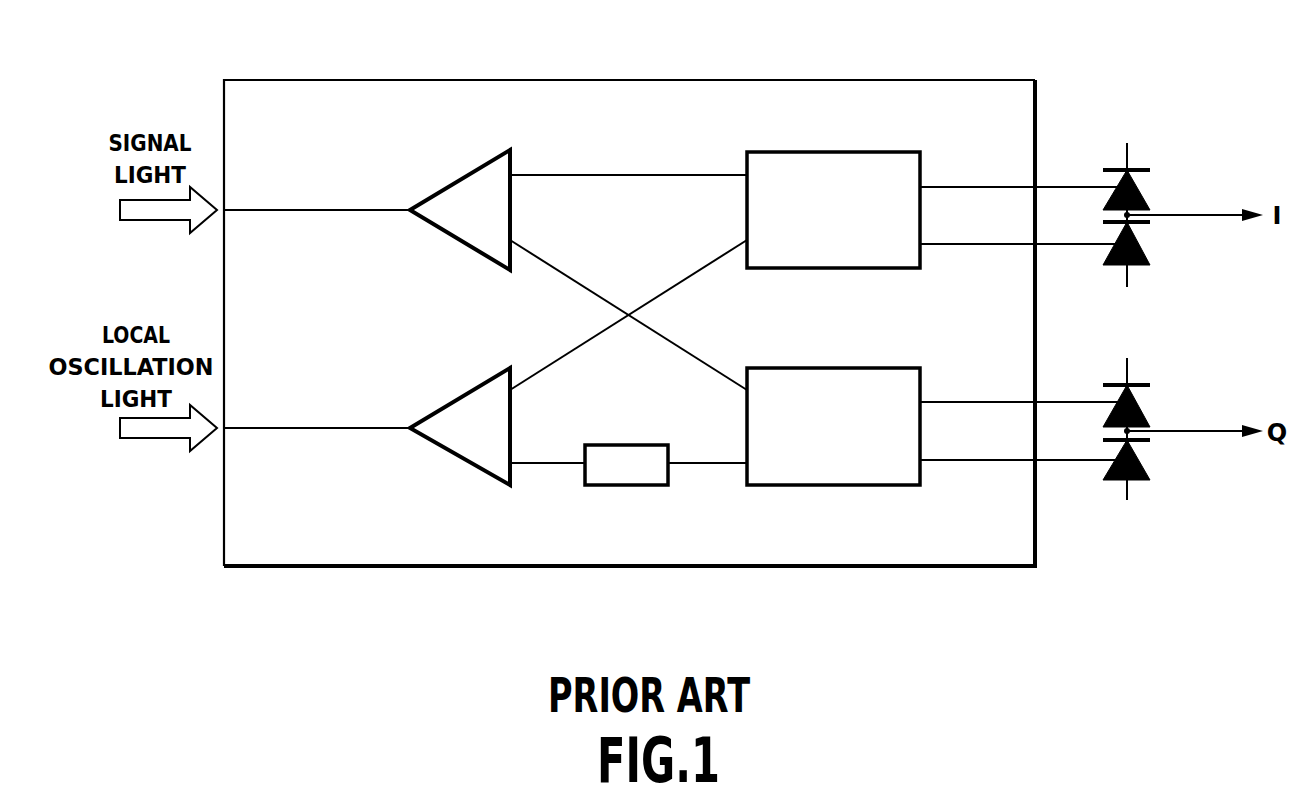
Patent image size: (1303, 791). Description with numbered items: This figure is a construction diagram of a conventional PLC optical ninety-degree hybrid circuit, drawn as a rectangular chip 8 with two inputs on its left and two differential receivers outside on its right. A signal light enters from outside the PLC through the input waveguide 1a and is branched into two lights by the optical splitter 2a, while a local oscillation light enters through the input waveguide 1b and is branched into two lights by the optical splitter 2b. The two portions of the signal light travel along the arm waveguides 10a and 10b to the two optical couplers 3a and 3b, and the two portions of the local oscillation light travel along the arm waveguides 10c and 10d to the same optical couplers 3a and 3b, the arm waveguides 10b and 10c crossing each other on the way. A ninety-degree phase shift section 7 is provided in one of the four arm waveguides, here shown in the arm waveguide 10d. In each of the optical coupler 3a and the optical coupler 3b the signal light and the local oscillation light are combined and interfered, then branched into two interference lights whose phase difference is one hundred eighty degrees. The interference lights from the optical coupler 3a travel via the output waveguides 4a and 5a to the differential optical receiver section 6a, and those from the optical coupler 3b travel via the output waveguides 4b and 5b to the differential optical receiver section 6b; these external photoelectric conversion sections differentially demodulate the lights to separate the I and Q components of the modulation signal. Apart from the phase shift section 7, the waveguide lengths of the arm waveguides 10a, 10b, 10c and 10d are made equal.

The optical hybrid circuit (coherent receiver chip) 8 is at (645, 80).
The input waveguide 1a is at (292, 210).
The input waveguide 1b is at (292, 428).
The optical splitter 2a is at (457, 178).
The optical splitter 2b is at (457, 397).
The arm waveguide 10a is at (590, 175).
The arm waveguide 10b is at (558, 265).
The arm waveguide 10c is at (555, 362).
The arm waveguide 10d is at (535, 463).
The 90-degree phase shift section 7 is at (630, 485).
The optical coupler 3a is at (830, 152).
The optical coupler 3b is at (830, 368).
The output waveguide 4a is at (953, 187).
The output waveguide 5a is at (953, 244).
The output waveguide 4b is at (953, 402).
The output waveguide 5b is at (953, 460).
The differential optical receiver section 6a is at (1126, 201).
The differential optical receiver section 6b is at (1126, 416).